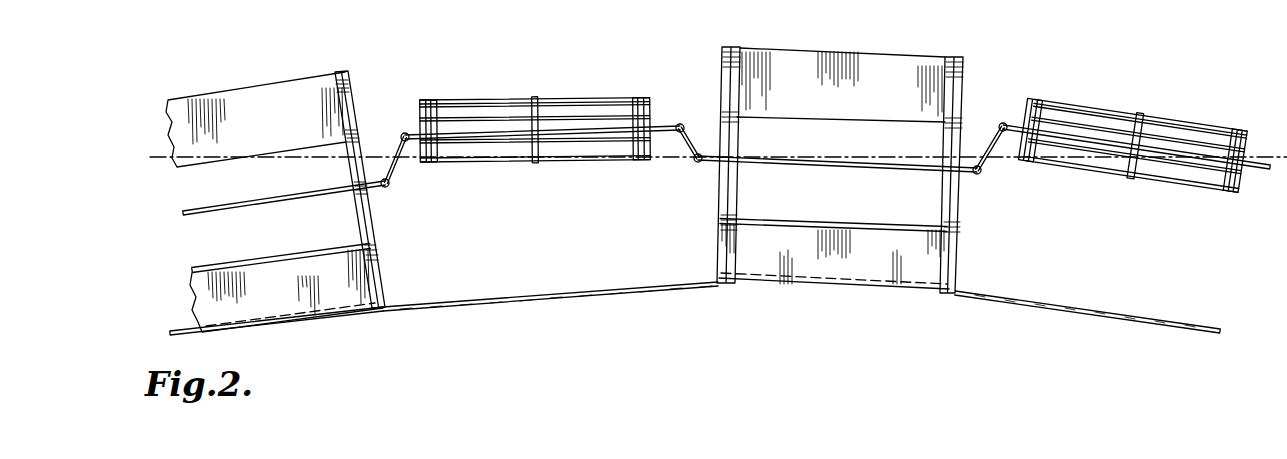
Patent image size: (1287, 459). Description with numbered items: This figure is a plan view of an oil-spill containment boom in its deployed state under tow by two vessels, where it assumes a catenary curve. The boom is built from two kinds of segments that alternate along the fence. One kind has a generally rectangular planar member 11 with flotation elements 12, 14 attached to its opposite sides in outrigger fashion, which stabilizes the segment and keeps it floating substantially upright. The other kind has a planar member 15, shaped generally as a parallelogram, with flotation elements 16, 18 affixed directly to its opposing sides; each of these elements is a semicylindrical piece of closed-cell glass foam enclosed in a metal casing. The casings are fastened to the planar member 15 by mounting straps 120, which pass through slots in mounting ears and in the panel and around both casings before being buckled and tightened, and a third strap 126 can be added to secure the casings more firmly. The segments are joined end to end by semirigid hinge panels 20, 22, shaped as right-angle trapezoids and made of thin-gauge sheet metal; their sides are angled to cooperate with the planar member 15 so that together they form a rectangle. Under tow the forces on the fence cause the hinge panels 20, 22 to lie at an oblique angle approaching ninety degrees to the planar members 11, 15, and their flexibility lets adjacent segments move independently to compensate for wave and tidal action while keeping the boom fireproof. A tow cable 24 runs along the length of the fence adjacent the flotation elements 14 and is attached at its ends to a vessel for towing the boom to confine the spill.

The planar member 11 is at (263, 205).
The flotation element 12 is at (279, 92).
The flotation element 14 is at (334, 304).
The planar member 15 is at (470, 128).
The flotation element 16 is at (835, 101).
The flotation element 18 is at (830, 187).
The hinge panel 20 is at (397, 142).
The hinge panel 22 is at (694, 121).
The tow cable 24 is at (504, 295).
The mounting strap 120 is at (829, 164).
The third strap 126 is at (859, 150).